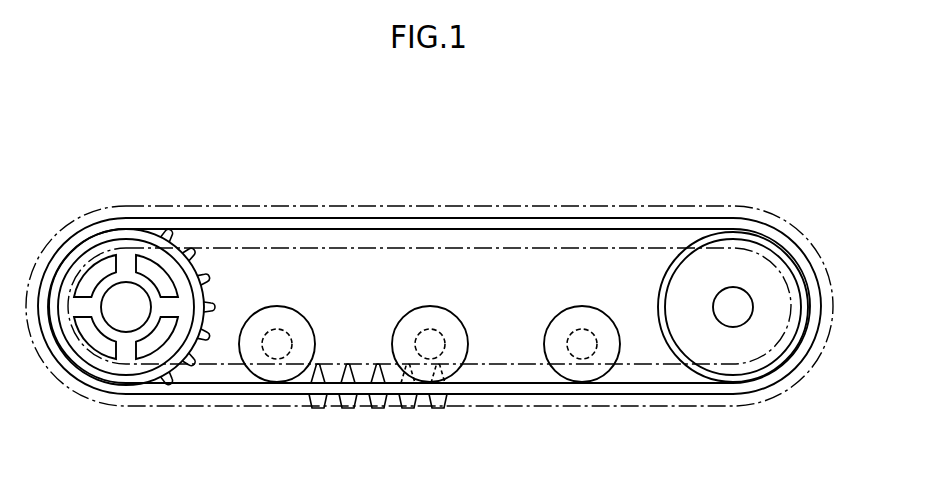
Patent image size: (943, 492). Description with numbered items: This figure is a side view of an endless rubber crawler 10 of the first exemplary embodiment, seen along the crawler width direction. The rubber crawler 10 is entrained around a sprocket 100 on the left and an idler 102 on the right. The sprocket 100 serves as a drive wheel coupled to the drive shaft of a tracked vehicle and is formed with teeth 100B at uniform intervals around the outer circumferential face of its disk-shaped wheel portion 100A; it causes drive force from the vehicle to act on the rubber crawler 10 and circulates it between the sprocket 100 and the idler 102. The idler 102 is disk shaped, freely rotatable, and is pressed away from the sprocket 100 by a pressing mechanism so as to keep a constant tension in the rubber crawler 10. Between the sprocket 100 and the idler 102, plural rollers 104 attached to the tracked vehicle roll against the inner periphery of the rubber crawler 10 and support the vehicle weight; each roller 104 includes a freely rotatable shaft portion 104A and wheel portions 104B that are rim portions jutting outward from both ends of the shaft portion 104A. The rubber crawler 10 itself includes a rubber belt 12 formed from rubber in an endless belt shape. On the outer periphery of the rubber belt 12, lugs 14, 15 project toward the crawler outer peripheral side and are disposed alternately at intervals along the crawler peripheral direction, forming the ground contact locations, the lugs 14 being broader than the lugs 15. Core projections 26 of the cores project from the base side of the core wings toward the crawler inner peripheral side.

The rubber crawler 10 is at (407, 205).
The rubber belt 12 is at (388, 231).
The lug 14 is at (346, 410).
The lug 15 is at (378, 410).
The core projection 26 is at (377, 365).
The sprocket 100 is at (204, 307).
The wheel portion 100A is at (206, 290).
The teeth 100B is at (206, 270).
The idler 102 is at (666, 268).
The roller 104 is at (358, 369).
The shaft portion 104A is at (262, 352).
The wheel portion 104B is at (238, 344).